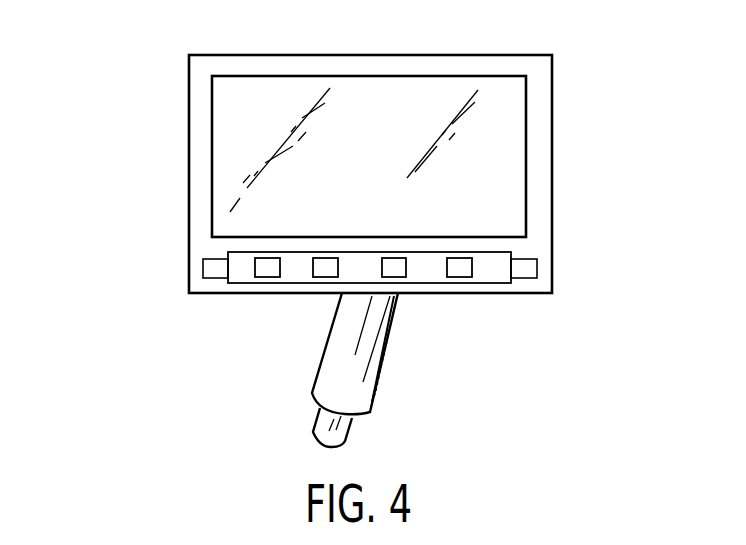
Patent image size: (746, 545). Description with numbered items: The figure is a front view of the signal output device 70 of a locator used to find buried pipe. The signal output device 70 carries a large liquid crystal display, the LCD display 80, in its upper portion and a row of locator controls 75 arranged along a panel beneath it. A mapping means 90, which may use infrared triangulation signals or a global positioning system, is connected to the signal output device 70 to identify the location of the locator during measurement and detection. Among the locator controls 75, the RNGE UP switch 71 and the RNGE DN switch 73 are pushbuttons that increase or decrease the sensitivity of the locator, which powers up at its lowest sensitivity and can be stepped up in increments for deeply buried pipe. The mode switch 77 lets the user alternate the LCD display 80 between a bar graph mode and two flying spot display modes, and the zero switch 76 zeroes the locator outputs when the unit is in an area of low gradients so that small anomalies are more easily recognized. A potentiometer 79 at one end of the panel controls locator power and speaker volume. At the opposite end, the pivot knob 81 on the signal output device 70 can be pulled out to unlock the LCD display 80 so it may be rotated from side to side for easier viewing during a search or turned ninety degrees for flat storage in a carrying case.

The signal output device 70 is at (355, 238).
The RNGE UP switch 71 is at (460, 278).
The RNGE DN switch 73 is at (265, 278).
The locator controls 75 is at (567, 248).
The zero switch 76 is at (323, 265).
The mode switch 77 is at (393, 265).
The potentiometer 79 is at (532, 268).
The LCD display 80 is at (510, 119).
The pivot knob 81 is at (218, 268).
The mapping means 90 is at (562, 176).